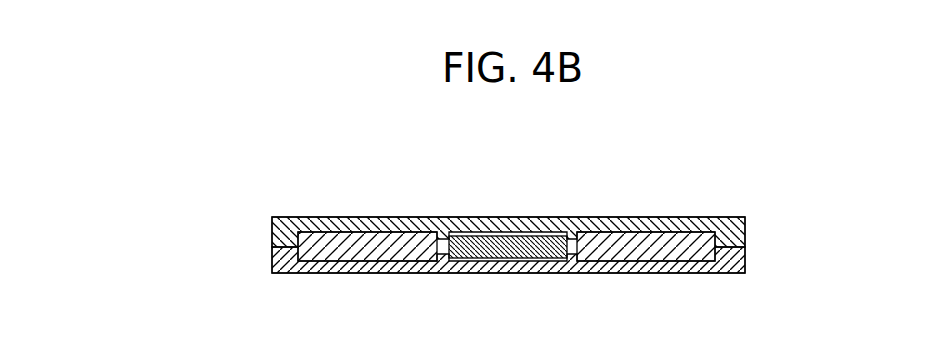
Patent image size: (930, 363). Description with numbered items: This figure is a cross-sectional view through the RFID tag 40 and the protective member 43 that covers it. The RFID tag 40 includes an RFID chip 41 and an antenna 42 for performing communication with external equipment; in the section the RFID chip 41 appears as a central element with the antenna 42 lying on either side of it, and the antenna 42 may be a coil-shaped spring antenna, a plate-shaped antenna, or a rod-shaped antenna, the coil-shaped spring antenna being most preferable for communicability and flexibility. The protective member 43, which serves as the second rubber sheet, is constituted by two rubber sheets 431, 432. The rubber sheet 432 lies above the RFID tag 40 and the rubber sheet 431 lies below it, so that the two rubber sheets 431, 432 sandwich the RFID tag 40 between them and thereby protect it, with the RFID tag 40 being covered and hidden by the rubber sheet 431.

The RFID tag 40 is at (725, 165).
The RFID chip 41 is at (524, 231).
The antenna 42 is at (412, 225).
The protective member 43 is at (181, 205).
The rubber sheet 431 is at (271, 272).
The rubber sheet 432 is at (271, 231).